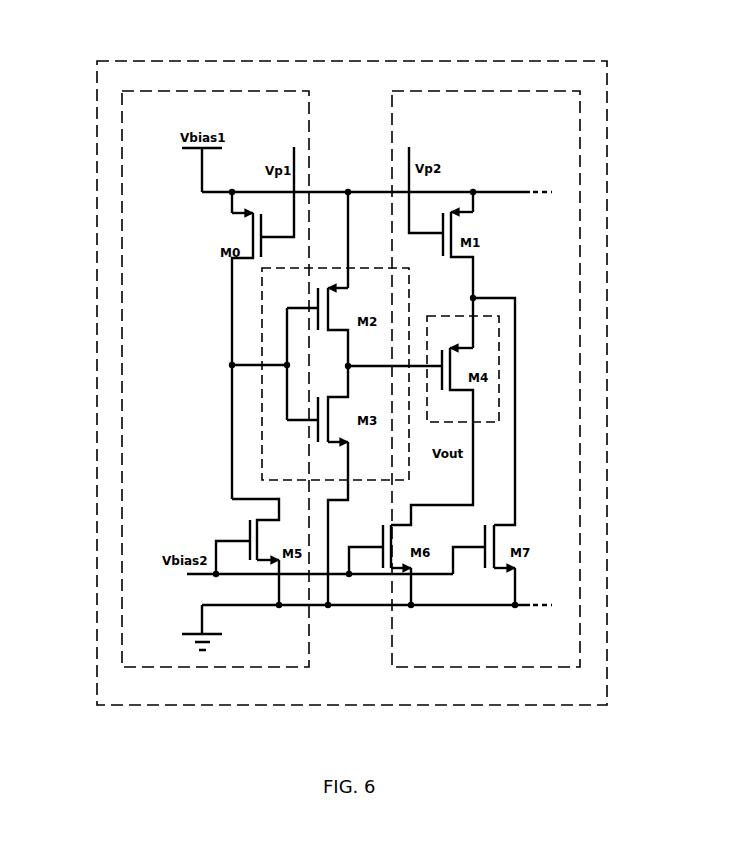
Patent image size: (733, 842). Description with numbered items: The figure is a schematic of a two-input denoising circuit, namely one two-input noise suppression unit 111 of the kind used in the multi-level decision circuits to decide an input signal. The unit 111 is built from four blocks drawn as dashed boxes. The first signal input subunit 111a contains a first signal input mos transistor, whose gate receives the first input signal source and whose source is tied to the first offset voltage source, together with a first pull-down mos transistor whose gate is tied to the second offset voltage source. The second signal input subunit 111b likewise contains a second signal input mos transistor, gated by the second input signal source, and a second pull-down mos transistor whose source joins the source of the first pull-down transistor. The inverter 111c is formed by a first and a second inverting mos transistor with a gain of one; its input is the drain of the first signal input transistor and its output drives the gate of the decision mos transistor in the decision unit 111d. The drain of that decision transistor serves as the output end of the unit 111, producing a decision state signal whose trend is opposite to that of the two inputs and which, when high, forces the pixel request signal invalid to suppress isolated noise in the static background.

The two-input noise suppression unit 111 is at (362, 705).
The first signal input subunit 111a is at (192, 91).
The second signal input subunit 111b is at (510, 91).
The inverter 111c is at (273, 305).
The decision unit 111d is at (485, 332).